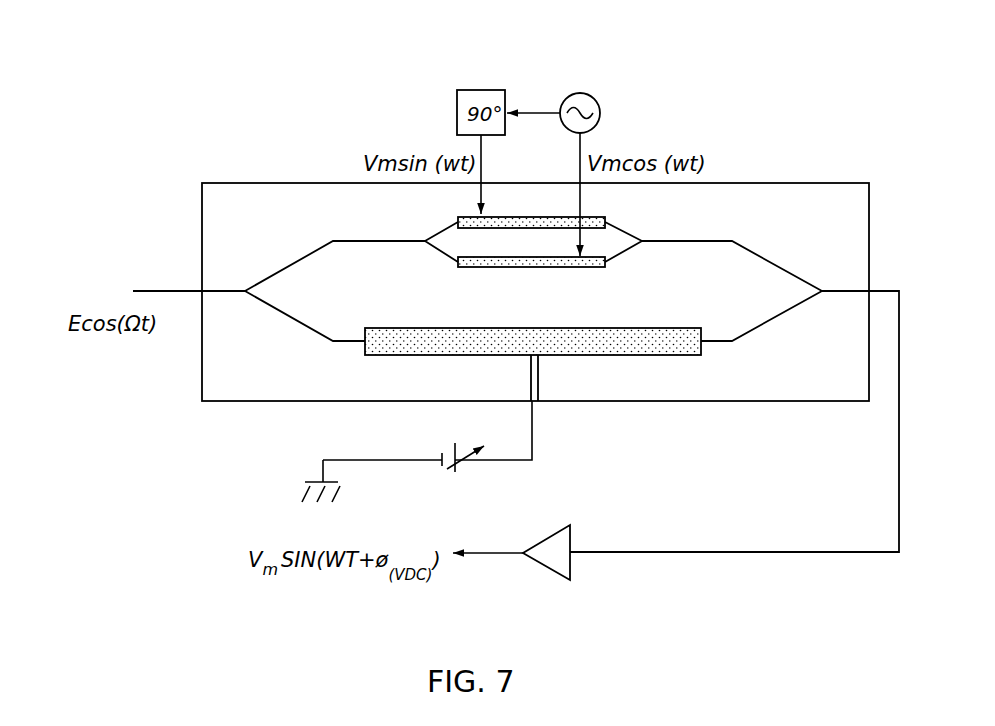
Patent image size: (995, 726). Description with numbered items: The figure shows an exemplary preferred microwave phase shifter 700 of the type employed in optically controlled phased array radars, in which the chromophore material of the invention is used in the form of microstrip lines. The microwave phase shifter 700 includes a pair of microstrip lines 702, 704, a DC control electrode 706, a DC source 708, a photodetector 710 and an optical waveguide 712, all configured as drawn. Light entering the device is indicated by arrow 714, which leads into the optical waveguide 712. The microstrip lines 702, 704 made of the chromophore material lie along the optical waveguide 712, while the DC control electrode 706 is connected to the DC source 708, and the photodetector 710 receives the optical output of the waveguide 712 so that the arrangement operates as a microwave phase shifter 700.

The microwave phase shifter 700 is at (223, 116).
The microstrip line 702 is at (551, 231).
The microstrip line 704 is at (519, 270).
The DC control electrode 706 is at (378, 359).
The DC source 708 is at (477, 477).
The photodetector 710 is at (548, 572).
The optical waveguide 712 is at (701, 236).
The light 714 is at (171, 278).